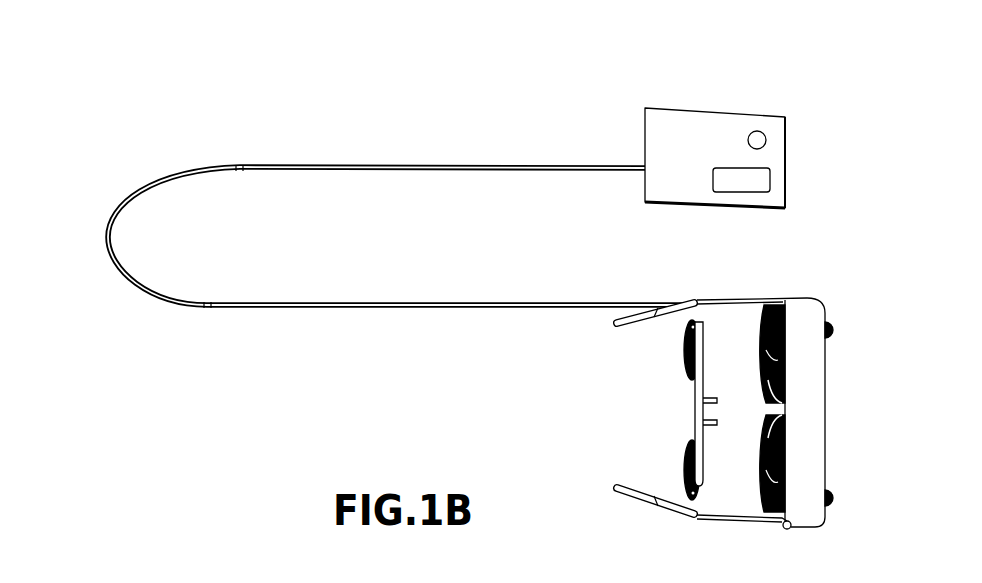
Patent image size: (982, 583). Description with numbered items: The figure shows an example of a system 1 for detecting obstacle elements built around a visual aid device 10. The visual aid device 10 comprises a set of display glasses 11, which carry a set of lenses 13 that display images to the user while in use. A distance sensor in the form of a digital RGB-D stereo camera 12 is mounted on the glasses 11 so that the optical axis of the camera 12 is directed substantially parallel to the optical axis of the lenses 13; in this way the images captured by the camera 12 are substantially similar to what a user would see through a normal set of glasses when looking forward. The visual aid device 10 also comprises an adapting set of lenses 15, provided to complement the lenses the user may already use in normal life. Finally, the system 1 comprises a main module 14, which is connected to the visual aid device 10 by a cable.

The system 1 is at (248, 85).
The visual aid device 10 is at (748, 283).
The display glasses 11 is at (813, 297).
The digital RGB-D stereo camera 12 is at (830, 503).
The lenses 13 is at (762, 353).
The main module 14 is at (714, 110).
The adapting set of lenses 15 is at (685, 460).